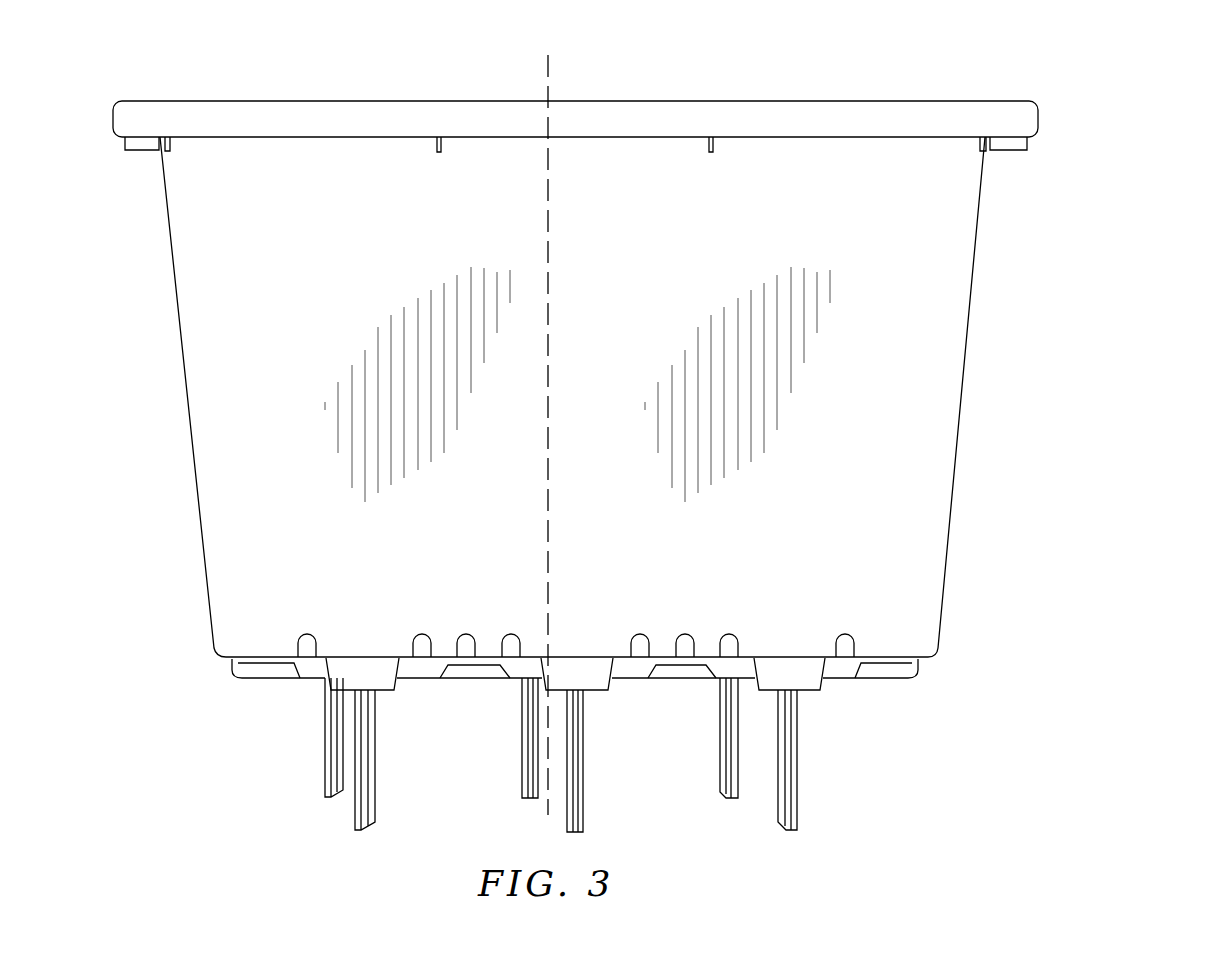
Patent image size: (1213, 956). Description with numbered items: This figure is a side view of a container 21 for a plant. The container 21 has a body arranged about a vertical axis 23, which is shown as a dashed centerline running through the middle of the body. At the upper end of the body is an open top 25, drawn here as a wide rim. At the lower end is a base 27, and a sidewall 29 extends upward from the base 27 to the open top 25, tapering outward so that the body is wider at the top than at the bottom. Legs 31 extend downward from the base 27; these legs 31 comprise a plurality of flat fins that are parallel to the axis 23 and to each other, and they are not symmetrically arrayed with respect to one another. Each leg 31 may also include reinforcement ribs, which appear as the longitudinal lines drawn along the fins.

The container 21 is at (653, 433).
The vertical axis 23 is at (550, 90).
The open top 25 is at (890, 101).
The base 27 is at (932, 660).
The sidewall 29 is at (940, 350).
The legs 31 is at (796, 778).